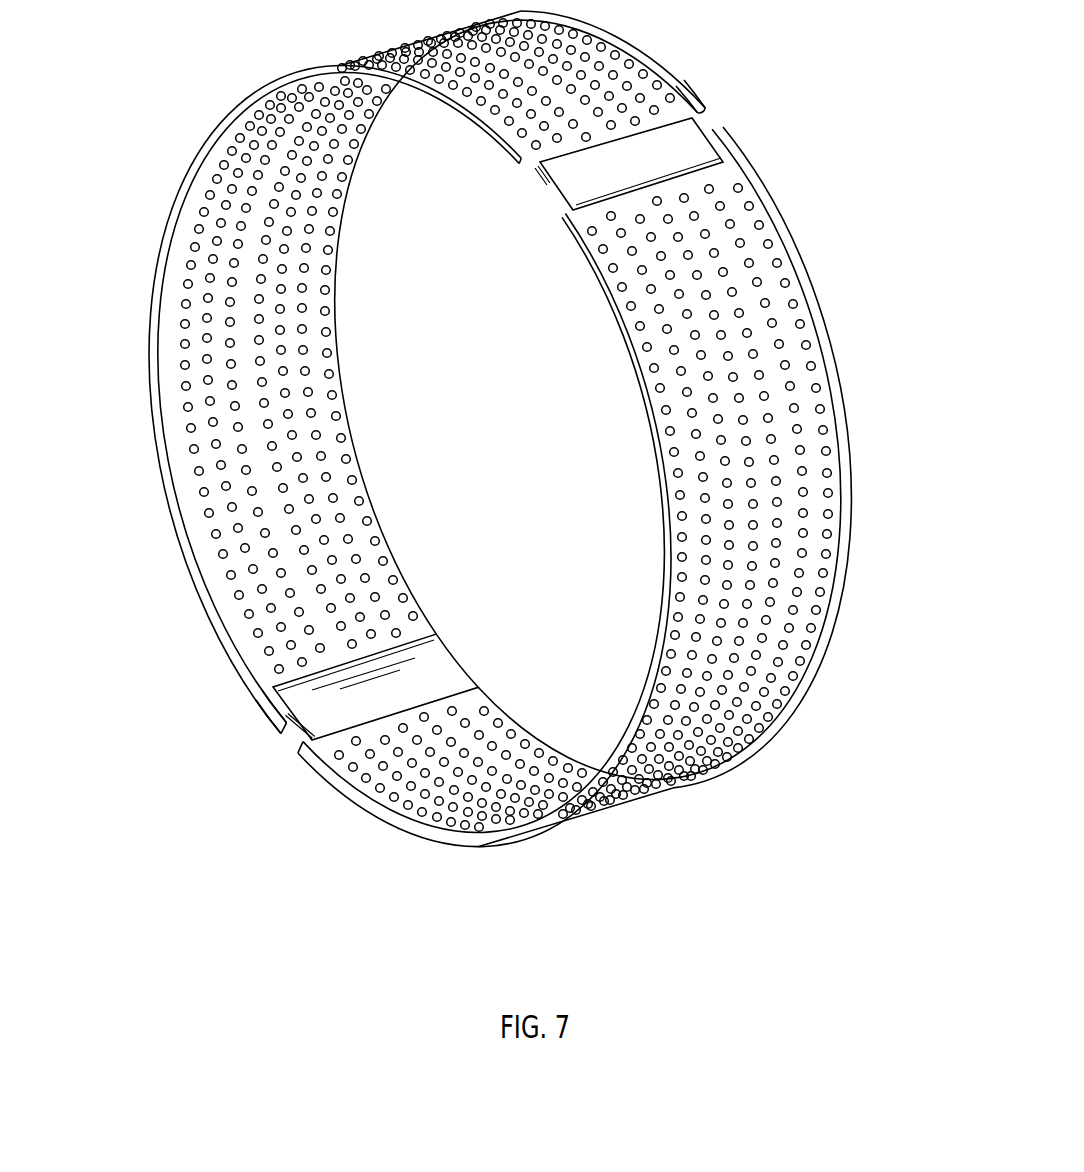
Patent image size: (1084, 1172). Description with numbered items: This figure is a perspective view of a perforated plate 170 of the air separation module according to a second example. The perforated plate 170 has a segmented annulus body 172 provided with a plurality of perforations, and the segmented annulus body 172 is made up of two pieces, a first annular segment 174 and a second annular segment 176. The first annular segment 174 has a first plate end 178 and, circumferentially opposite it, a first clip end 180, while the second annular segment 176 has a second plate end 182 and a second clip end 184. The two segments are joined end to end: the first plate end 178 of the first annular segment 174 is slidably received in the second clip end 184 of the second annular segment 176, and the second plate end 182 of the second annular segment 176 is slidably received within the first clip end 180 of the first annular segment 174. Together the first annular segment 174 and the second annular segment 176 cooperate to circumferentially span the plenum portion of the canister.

The perforated plate 170 is at (501, 483).
The segmented annulus body 172 is at (727, 737).
The first annular segment 174 is at (109, 548).
The second annular segment 176 is at (906, 548).
The first plate end 178 is at (220, 716).
The first clip end 180 is at (703, 66).
The second plate end 182 is at (761, 121).
The second clip end 184 is at (293, 782).